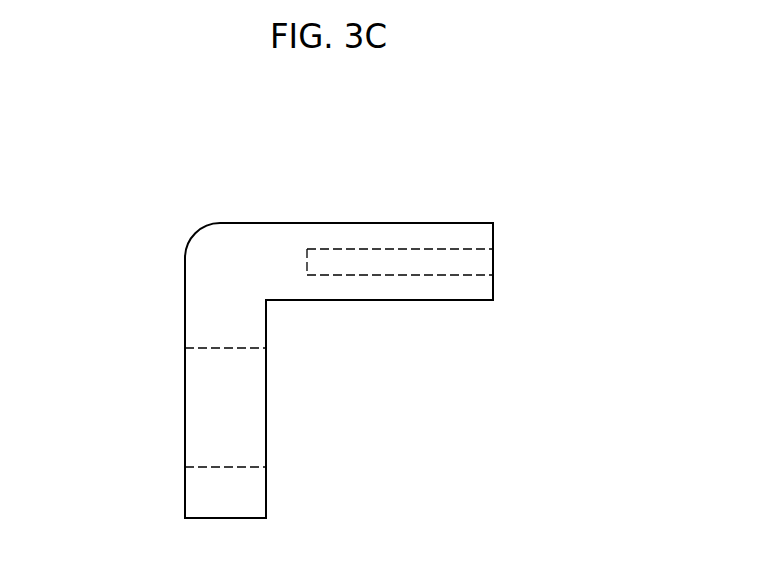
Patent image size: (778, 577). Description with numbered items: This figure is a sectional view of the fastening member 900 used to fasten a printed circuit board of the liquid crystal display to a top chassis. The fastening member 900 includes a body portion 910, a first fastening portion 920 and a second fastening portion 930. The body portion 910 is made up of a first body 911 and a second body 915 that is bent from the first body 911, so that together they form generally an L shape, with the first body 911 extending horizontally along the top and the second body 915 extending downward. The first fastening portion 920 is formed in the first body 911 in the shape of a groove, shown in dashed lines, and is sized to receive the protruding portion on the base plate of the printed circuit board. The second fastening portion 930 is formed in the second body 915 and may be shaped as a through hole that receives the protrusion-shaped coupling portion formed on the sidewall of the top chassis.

The fastening member 900 is at (536, 194).
The body portion 910 is at (376, 410).
The first body 911 is at (347, 289).
The second body 915 is at (266, 492).
The first fastening portion 920 is at (493, 260).
The second fastening portion 930 is at (197, 423).